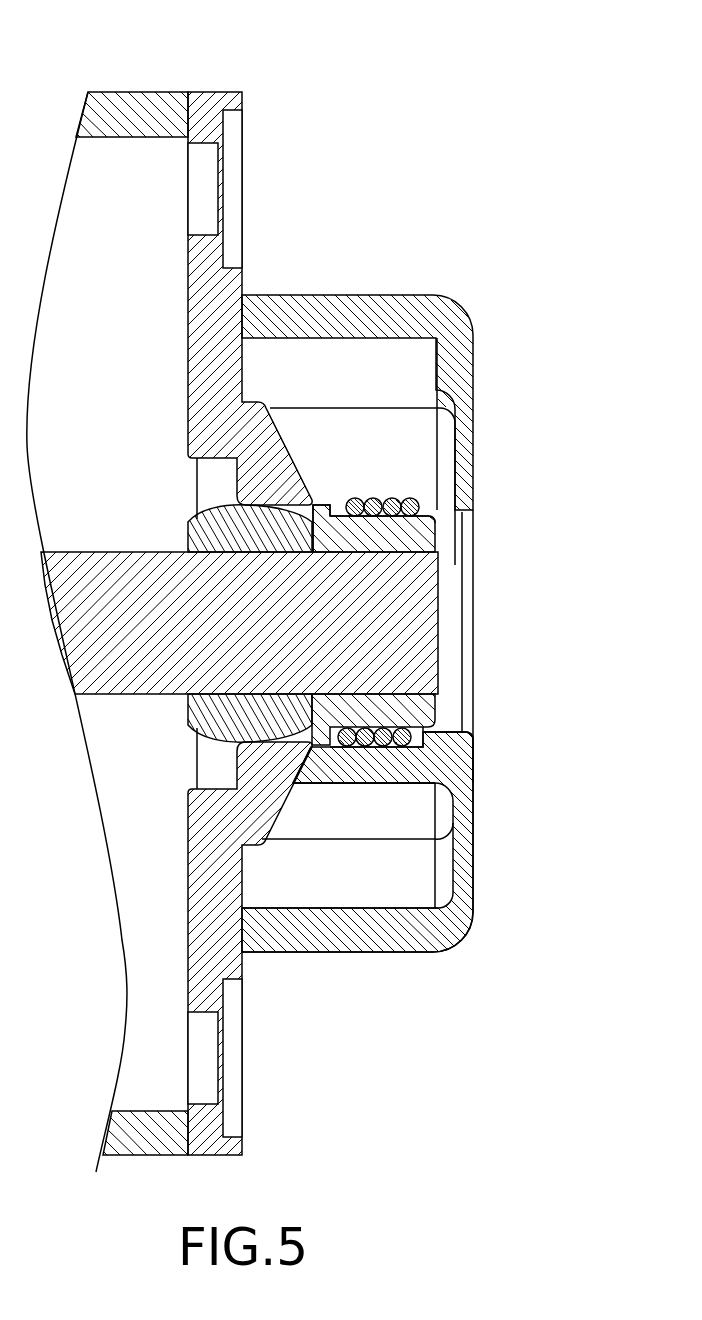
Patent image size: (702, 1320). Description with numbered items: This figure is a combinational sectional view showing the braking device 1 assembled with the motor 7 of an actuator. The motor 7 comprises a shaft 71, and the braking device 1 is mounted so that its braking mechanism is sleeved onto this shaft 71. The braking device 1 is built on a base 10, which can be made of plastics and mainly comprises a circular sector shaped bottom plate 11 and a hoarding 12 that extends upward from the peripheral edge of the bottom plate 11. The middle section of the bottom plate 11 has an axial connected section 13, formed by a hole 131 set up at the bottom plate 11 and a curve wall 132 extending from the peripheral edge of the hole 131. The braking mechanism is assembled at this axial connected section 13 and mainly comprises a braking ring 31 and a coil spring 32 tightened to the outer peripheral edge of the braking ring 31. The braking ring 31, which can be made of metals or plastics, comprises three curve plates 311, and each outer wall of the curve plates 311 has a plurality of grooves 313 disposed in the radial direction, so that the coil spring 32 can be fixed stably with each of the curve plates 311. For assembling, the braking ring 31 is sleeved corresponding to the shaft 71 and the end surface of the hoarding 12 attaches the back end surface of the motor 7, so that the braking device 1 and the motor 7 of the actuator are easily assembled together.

The braking device 1 is at (356, 268).
The motor 7 is at (149, 72).
The shaft 71 is at (425, 615).
The base 10 is at (331, 975).
The bottom plate 11 is at (475, 862).
The hoarding 12 is at (266, 933).
The axial connected section 13 is at (558, 757).
The hole 131 is at (448, 726).
The curve wall 132 is at (383, 774).
The braking ring 31 is at (442, 534).
The curve plates 311 is at (343, 535).
The grooves 313 is at (420, 500).
The coil spring 32 is at (394, 503).